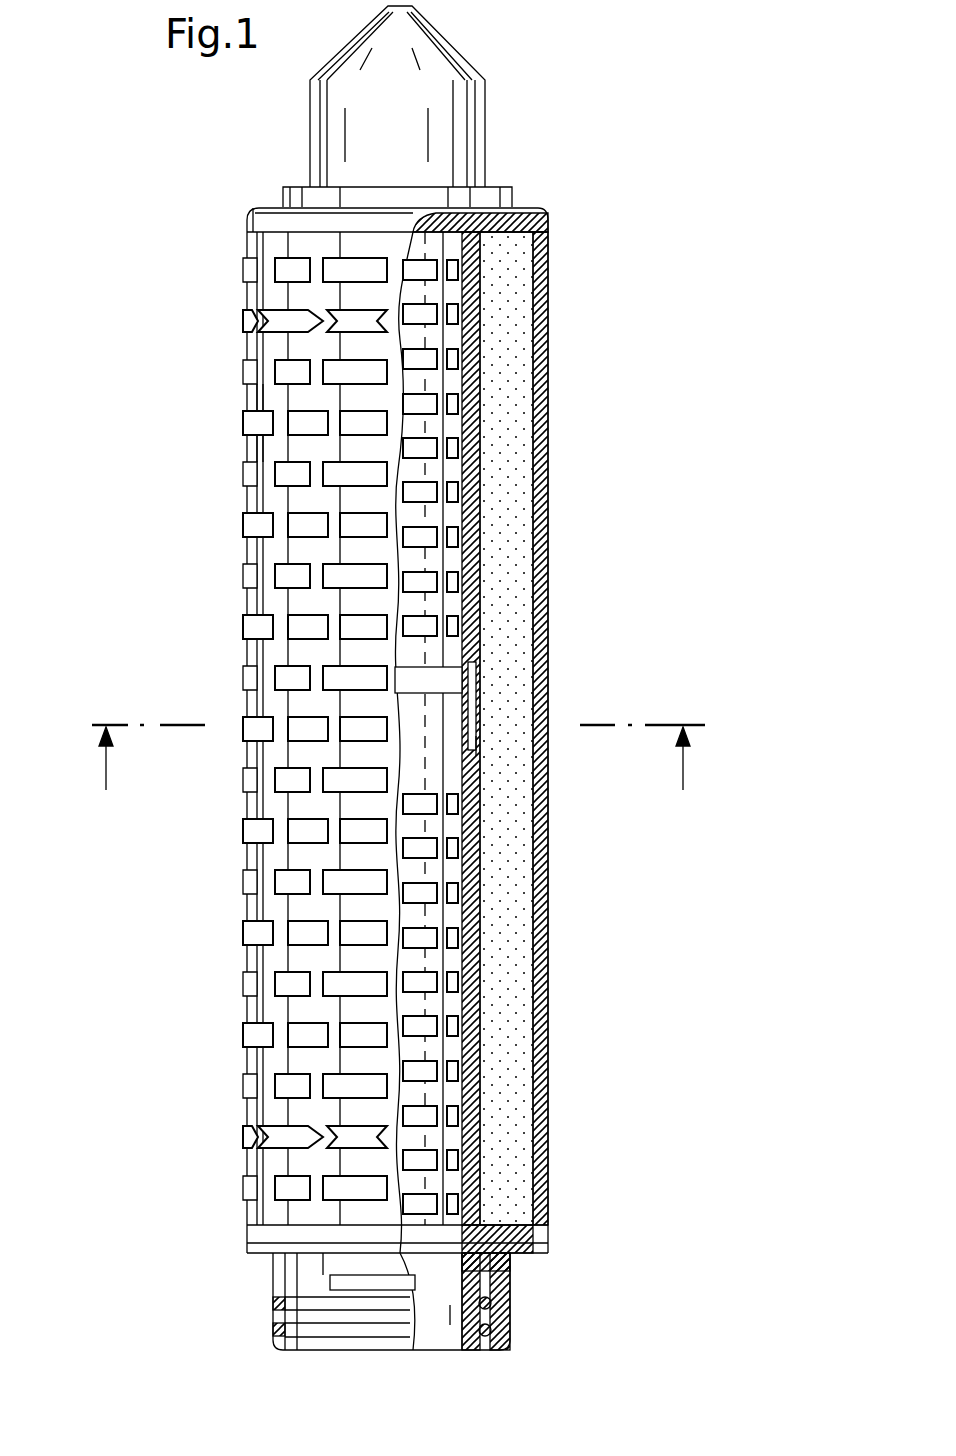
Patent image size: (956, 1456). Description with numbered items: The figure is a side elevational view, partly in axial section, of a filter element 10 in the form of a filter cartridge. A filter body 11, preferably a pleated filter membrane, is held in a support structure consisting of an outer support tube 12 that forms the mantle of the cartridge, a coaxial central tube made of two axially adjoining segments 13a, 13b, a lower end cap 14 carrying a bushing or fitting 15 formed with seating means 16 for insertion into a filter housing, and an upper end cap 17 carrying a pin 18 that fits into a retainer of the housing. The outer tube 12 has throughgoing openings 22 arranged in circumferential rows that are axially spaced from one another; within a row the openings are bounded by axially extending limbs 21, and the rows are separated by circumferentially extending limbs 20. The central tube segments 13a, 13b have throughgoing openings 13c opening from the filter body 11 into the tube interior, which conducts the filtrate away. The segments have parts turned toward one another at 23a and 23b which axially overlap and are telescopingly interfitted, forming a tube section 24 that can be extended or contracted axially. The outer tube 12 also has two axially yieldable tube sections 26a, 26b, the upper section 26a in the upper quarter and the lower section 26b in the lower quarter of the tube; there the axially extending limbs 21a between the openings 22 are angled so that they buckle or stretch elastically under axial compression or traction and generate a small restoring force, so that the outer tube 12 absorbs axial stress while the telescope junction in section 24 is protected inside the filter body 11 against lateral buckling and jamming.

The filter element 10 is at (573, 142).
The filter body 11 is at (505, 918).
The outer support tube 12 is at (245, 859).
The upper tube segment of central tube 13a is at (455, 243).
The lower tube segment of central tube 13b is at (432, 1085).
The throughgoing openings of central tube 13c is at (473, 492).
The lower end cap 14 is at (262, 1244).
The bushing or fitting 15 is at (500, 1272).
The seating means 16 is at (273, 1299).
The upper end cap 17 is at (250, 210).
The pin 18 is at (462, 118).
The circumferentially extending limbs 20 is at (243, 446).
The axially extending limbs 21 is at (263, 481).
The angled axially extending limbs 21a is at (283, 338).
The throughgoing openings 22 is at (308, 312).
The overlapping part of upper tube segment 23a is at (473, 710).
The overlapping part of lower tube segment 23b is at (467, 728).
The axially yieldable tube section 24 is at (478, 746).
The upper axially yieldable tube section 26a is at (244, 319).
The lower axially yieldable tube section 26b is at (244, 1136).